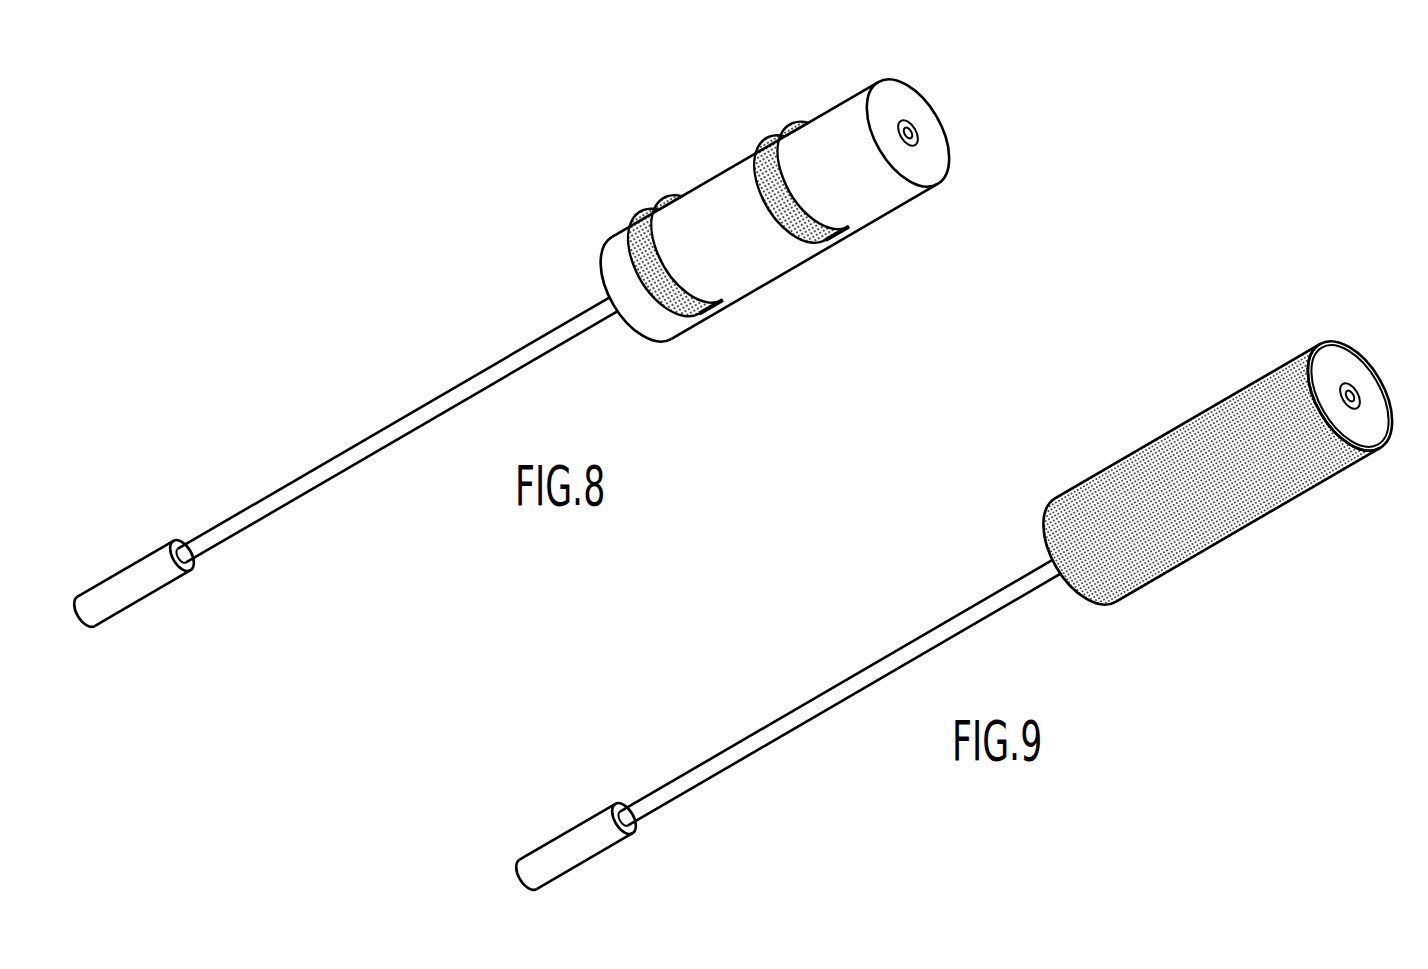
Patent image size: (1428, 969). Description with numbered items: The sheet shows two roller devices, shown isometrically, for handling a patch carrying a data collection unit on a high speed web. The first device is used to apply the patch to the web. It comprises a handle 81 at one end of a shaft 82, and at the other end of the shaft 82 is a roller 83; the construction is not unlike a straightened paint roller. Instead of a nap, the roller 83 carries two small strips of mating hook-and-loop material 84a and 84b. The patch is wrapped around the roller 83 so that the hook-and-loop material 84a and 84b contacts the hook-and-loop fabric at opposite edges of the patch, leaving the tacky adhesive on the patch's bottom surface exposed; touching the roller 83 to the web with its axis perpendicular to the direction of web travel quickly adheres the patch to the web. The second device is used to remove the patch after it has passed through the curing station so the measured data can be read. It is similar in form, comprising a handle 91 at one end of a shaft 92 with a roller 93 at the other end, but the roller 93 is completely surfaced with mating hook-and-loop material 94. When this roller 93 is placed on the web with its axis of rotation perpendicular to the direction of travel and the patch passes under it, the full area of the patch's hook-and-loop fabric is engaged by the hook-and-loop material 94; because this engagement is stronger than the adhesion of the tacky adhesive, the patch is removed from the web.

In FIG. 8, the handle 81 is at (157, 587).
In FIG. 8, the shaft 82 is at (422, 403).
In FIG. 8, the roller 83 is at (793, 263).
In FIG. 8, the hook-and-loop material strip 84a is at (673, 203).
In FIG. 8, the hook-and-loop material strip 84b is at (787, 137).
In FIG. 9, the handle 91 is at (600, 853).
In FIG. 9, the shaft 92 is at (867, 667).
In FIG. 9, the roller 93 is at (1340, 362).
In FIG. 9, the hook-and-loop material 94 is at (1163, 430).